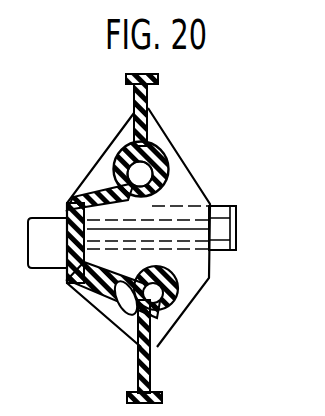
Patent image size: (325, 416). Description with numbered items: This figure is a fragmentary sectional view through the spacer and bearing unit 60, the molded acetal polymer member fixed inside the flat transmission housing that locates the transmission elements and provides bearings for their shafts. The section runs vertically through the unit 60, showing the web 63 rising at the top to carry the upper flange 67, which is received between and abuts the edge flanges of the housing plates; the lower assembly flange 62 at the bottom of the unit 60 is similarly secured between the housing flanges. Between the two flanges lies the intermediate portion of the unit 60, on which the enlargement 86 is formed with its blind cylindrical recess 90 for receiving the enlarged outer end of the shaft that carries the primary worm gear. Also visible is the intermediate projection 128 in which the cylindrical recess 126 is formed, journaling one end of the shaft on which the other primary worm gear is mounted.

The upper flange 67 is at (159, 58).
The web 63 is at (148, 107).
The spacer and bearing unit 60 is at (92, 188).
The enlargement 86 is at (126, 146).
The cylindrical recess 126 is at (151, 157).
The blind cylindrical recess 90 is at (172, 307).
The intermediate projection 128 is at (116, 306).
The lower assembly flange 62 is at (165, 390).